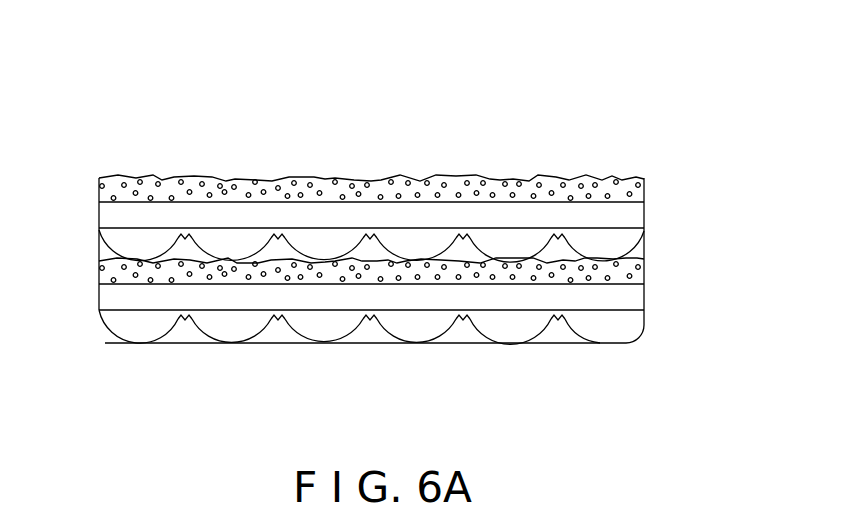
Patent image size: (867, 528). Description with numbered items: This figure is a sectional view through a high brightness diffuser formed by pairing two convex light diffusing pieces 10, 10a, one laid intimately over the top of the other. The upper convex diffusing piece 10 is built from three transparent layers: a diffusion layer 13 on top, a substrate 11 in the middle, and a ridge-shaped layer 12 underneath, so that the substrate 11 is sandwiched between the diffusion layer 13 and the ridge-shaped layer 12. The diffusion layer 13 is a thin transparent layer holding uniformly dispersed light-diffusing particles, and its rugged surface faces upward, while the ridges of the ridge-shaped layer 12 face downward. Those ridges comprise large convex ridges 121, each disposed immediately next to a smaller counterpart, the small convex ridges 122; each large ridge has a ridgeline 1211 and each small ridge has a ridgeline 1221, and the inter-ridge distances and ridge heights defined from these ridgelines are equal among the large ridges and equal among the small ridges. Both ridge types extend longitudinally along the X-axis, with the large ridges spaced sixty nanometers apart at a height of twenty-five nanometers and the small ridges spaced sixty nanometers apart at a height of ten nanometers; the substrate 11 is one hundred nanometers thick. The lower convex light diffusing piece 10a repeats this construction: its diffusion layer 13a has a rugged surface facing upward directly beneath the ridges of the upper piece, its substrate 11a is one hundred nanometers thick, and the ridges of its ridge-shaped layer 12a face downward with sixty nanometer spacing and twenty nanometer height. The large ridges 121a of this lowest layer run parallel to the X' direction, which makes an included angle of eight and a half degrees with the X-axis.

The convex diffusing piece 10 is at (733, 160).
The substrate 11 is at (644, 218).
The ridge-shaped layer 12 is at (413, 192).
The diffusion layer 13 is at (644, 190).
The large convex ridges 121 is at (525, 245).
The small convex ridges 122 is at (372, 238).
The ridgeline 1211 is at (510, 260).
The ridgeline 1221 is at (360, 250).
The convex light diffusing piece 10a is at (745, 270).
The substrate 11a is at (645, 302).
The ridge-shaped layer 12a is at (419, 359).
The diffusion layer 13a is at (645, 275).
The large ridges 121a is at (419, 335).